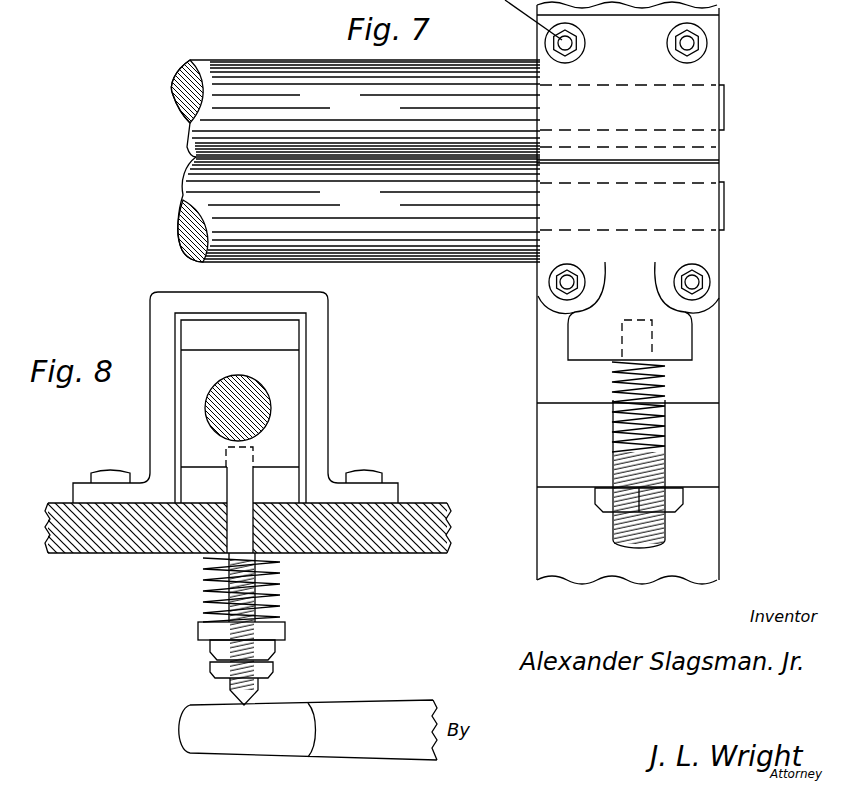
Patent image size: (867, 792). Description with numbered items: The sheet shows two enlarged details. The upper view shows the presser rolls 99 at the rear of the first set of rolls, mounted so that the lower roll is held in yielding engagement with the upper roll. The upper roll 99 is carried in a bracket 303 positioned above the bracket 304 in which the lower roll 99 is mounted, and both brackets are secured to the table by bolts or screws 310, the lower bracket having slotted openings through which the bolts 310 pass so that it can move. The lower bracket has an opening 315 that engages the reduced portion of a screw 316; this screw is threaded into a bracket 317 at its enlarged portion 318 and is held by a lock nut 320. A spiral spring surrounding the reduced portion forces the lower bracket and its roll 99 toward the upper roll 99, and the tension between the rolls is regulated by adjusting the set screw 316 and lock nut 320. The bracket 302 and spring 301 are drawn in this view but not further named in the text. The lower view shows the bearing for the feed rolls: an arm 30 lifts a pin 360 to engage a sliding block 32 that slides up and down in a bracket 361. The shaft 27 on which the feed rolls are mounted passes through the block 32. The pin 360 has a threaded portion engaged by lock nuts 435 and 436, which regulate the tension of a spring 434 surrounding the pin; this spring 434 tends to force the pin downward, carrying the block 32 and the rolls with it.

In FIG. 7, the rolls 99 is at (176, 92).
In FIG. 7, the bracket 303 is at (706, 71).
In FIG. 7, the bolts or screws 310 is at (690, 45).
In FIG. 7, the bracket 304 is at (696, 268).
In FIG. 7, the bracket 302 is at (673, 343).
In FIG. 7, the opening 315 is at (638, 330).
In FIG. 7, the spring 301 is at (660, 377).
In FIG. 7, the screw 316 is at (660, 440).
In FIG. 7, the bracket 317 is at (707, 420).
In FIG. 7, the enlarged portion 318 is at (663, 468).
In FIG. 7, the lock nut 320 is at (672, 498).
In FIG. 8, the bracket 361 is at (310, 313).
In FIG. 8, the sliding block 32 is at (272, 368).
In FIG. 8, the shaft 27 is at (258, 407).
In FIG. 8, the pin 360 is at (232, 487).
In FIG. 8, the spring 434 is at (267, 568).
In FIG. 8, the lock nut 435 is at (267, 647).
In FIG. 8, the lock nut 436 is at (273, 667).
In FIG. 8, the arm 30 is at (387, 700).